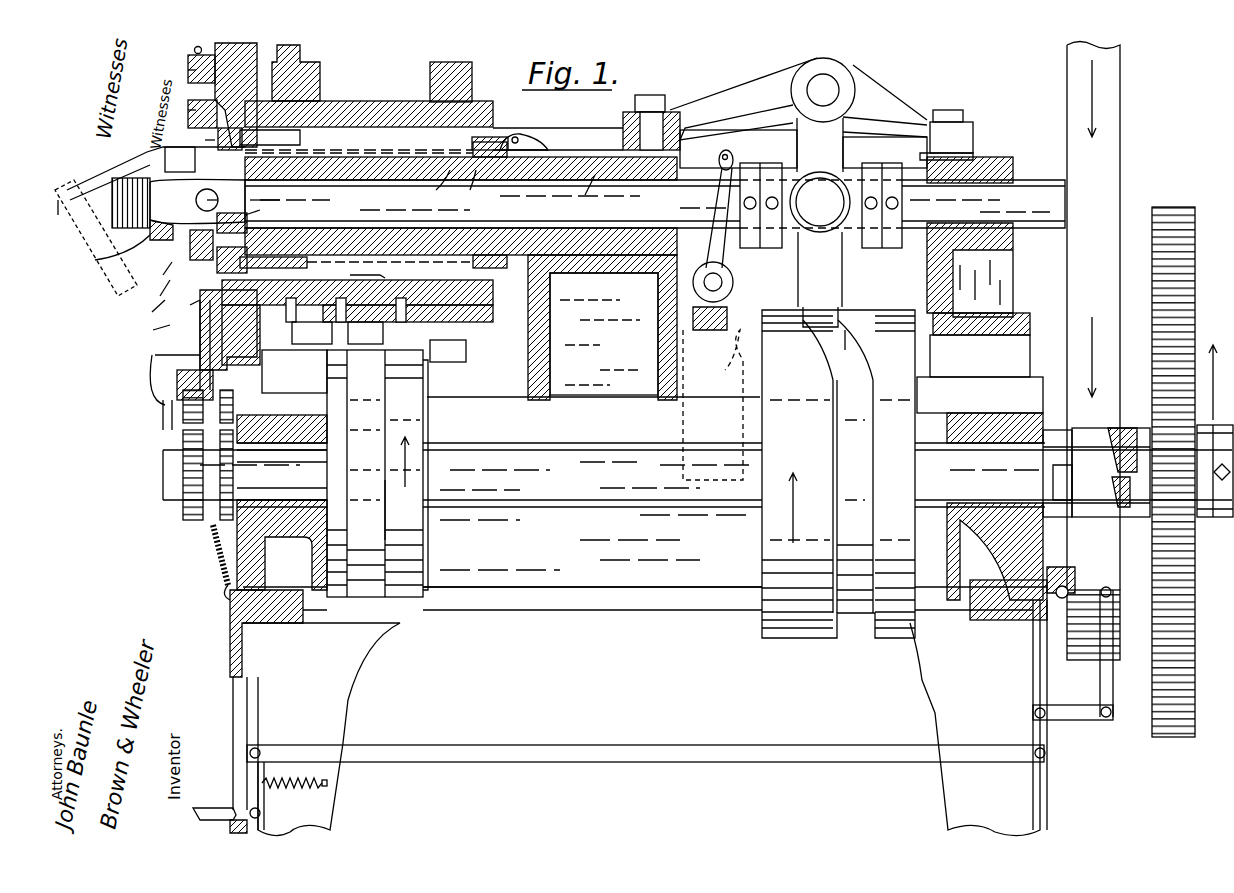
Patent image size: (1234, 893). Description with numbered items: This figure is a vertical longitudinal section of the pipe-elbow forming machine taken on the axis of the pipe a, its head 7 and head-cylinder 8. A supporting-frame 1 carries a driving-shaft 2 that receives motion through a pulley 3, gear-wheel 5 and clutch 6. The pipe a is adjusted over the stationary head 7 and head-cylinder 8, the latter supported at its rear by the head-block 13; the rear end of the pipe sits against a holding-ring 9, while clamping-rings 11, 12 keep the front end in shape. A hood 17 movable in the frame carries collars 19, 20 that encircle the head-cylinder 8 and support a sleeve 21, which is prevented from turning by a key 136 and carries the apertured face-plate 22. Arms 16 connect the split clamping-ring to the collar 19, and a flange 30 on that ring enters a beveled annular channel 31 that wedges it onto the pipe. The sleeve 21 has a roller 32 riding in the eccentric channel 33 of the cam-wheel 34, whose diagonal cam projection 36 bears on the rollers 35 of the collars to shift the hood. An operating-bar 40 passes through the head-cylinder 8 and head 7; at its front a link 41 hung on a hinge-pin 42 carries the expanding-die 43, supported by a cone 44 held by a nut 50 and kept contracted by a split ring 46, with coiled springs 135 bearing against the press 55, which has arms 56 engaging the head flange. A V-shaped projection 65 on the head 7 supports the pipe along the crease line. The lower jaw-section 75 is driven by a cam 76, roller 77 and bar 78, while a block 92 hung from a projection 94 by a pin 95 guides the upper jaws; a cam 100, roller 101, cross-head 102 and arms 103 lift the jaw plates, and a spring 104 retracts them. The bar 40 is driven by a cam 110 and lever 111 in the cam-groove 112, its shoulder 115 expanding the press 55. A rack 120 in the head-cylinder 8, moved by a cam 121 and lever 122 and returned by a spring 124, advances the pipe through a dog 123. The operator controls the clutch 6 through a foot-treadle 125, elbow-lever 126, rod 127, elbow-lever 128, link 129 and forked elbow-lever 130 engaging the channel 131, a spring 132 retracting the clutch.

The supporting-frame 1 is at (592, 559).
The driving-shaft 2 is at (697, 475).
The pulley 3 is at (1067, 300).
The gear-wheel 5 is at (1175, 207).
The clutch 6 is at (1111, 472).
The head 7 is at (215, 136).
The head-cylinder 8 is at (443, 188).
The holding-ring 9 is at (475, 187).
The clamping-ring 11 is at (66, 210).
The clamping-ring 12 is at (64, 182).
The head-block 13 is at (604, 334).
The rearwardly-projecting arms 16 is at (300, 140).
The hood 17 is at (294, 371).
The collar 19 is at (305, 62).
The collar 20 is at (460, 66).
The sleeve 21 is at (406, 110).
The face-plate 22 is at (213, 48).
The flange 30 is at (202, 106).
The annular channel 31 is at (245, 93).
The bearing wheel or roller 32 is at (384, 348).
The eccentric channel 33 is at (384, 453).
The cam-wheel 34 is at (398, 510).
The antifriction bearing-rollers 35 is at (448, 360).
The cam projection 36 is at (302, 571).
The operating-bar 40 is at (655, 204).
The link 41 is at (197, 201).
The hinge-pin 42 is at (218, 200).
The expanding-die 43 is at (200, 140).
The cone 44 is at (157, 273).
The split ring 46 is at (154, 293).
The nut 50 is at (112, 188).
The expanding-collar 55 is at (146, 311).
The arms 56 is at (300, 265).
The tapered projection 65 is at (280, 200).
The lower jaw-section 75 is at (184, 303).
The cam 76 is at (236, 468).
The roller 77 is at (230, 455).
The bar 78 is at (200, 337).
The block 92 is at (188, 108).
The projection 94 is at (188, 73).
The pin 95 is at (194, 49).
The cam 100 is at (183, 490).
The roller 101 is at (183, 420).
The cross-head 102 is at (160, 375).
The arms 103 is at (146, 330).
The spring 104 is at (215, 560).
The cam 110 is at (492, 137).
The lever 111 is at (798, 219).
The cam-groove 112 is at (854, 394).
The wedge-shaped shoulder 115 is at (268, 211).
The rack 120 is at (596, 192).
The cam 121 is at (700, 396).
The lever 122 is at (730, 292).
The dog 123 is at (525, 135).
The spring 124 is at (693, 308).
The foot-treadle 125 is at (216, 808).
The elbow-lever 126 is at (264, 803).
The rod 127 is at (553, 755).
The elbow-lever 128 is at (1073, 724).
The link 129 is at (1113, 680).
The elbow-lever 130 is at (1078, 594).
The channel 131 is at (1057, 462).
The spring 132 is at (294, 773).
The coiled springs 135 is at (95, 262).
The key 136 is at (375, 273).
The pipe a is at (125, 135).